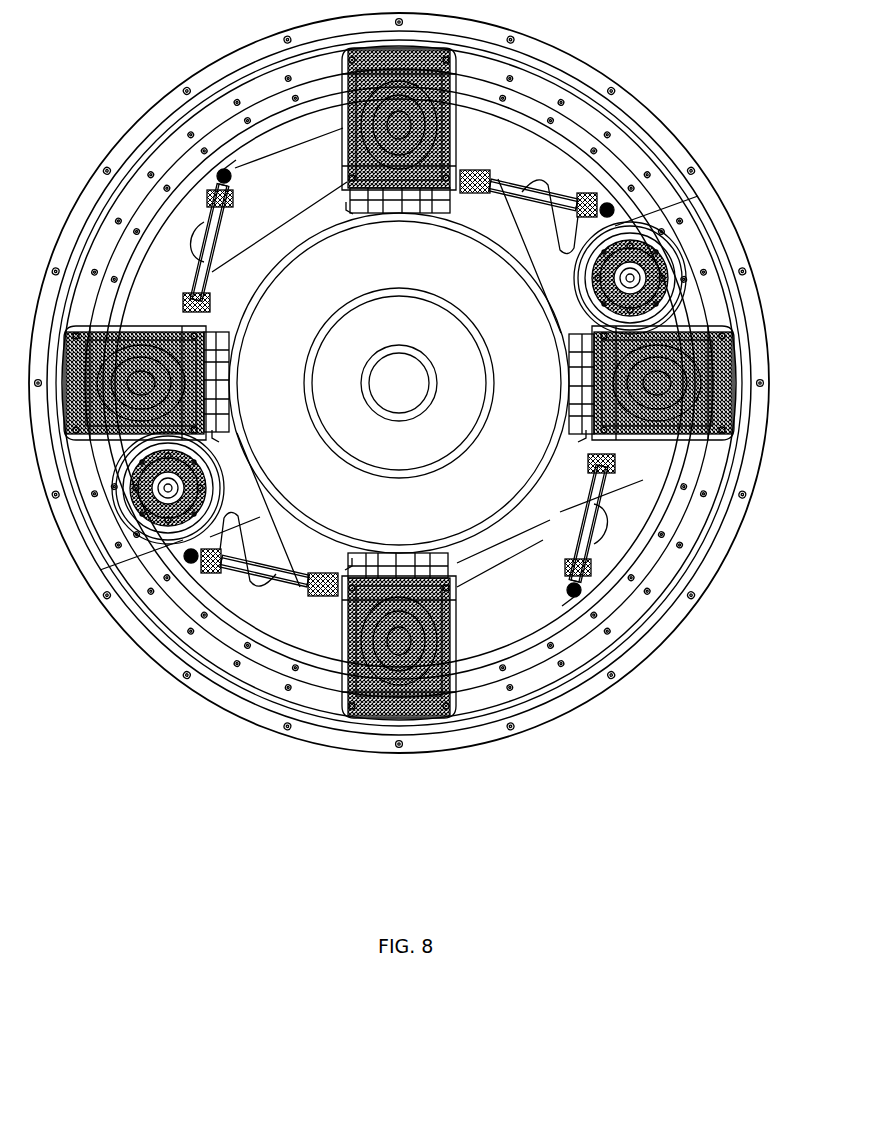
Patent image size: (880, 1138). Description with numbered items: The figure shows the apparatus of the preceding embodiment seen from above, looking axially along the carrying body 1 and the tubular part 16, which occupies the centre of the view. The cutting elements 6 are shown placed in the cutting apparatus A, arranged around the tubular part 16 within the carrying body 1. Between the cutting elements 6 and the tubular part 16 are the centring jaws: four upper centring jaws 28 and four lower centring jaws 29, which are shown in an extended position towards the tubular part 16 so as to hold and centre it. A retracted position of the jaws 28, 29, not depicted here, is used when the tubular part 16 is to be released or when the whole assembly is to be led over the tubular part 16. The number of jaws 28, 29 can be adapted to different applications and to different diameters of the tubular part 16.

The carrying body 1 is at (226, 60).
The cutting elements 6 is at (505, 622).
The tubular part 16 is at (399, 383).
The upper centring jaws 28 is at (352, 207).
The lower centring jaws 29 is at (214, 437).
The cutting apparatus A is at (233, 632).